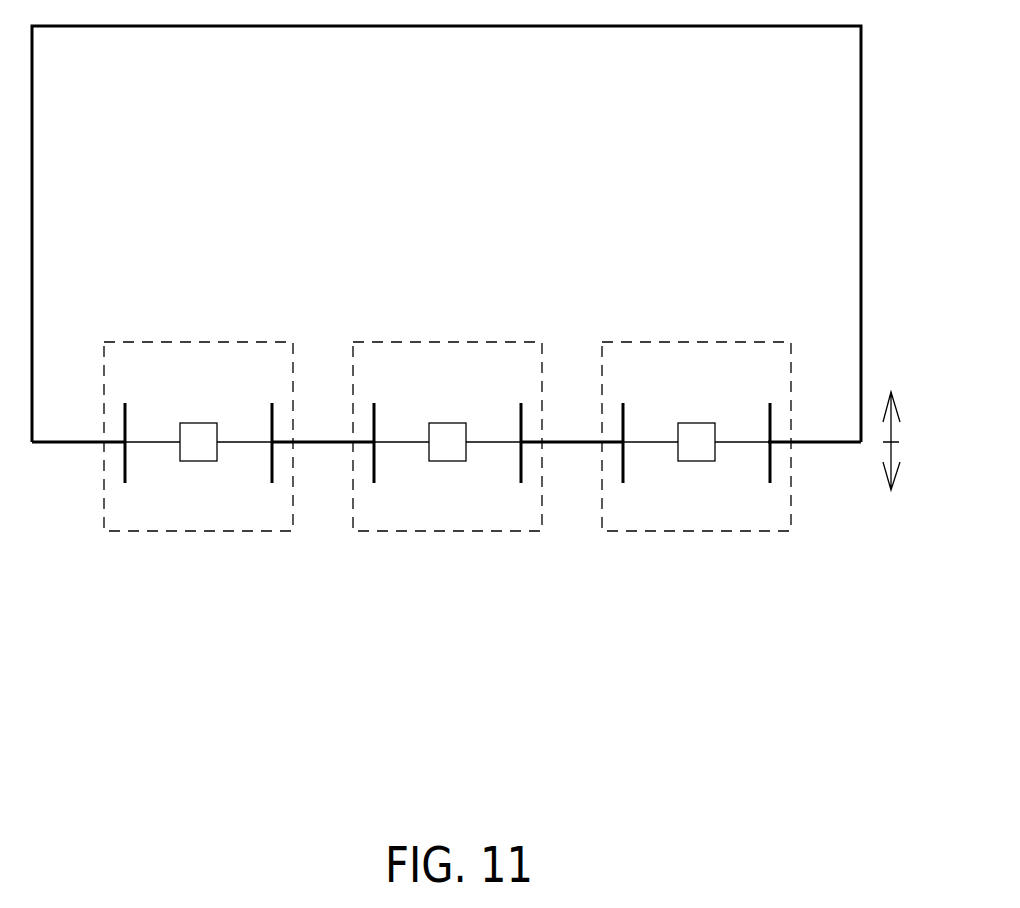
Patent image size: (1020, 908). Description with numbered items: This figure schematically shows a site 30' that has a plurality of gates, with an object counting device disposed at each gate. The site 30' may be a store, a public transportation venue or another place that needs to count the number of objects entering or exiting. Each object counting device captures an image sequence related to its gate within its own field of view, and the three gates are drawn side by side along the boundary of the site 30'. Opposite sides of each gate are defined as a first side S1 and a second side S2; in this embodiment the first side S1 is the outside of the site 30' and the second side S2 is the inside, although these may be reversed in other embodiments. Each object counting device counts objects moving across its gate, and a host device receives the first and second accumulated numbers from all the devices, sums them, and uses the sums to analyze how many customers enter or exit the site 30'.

The site 30' is at (491, 234).
The first side S1 is at (909, 471).
The second side S2 is at (909, 417).